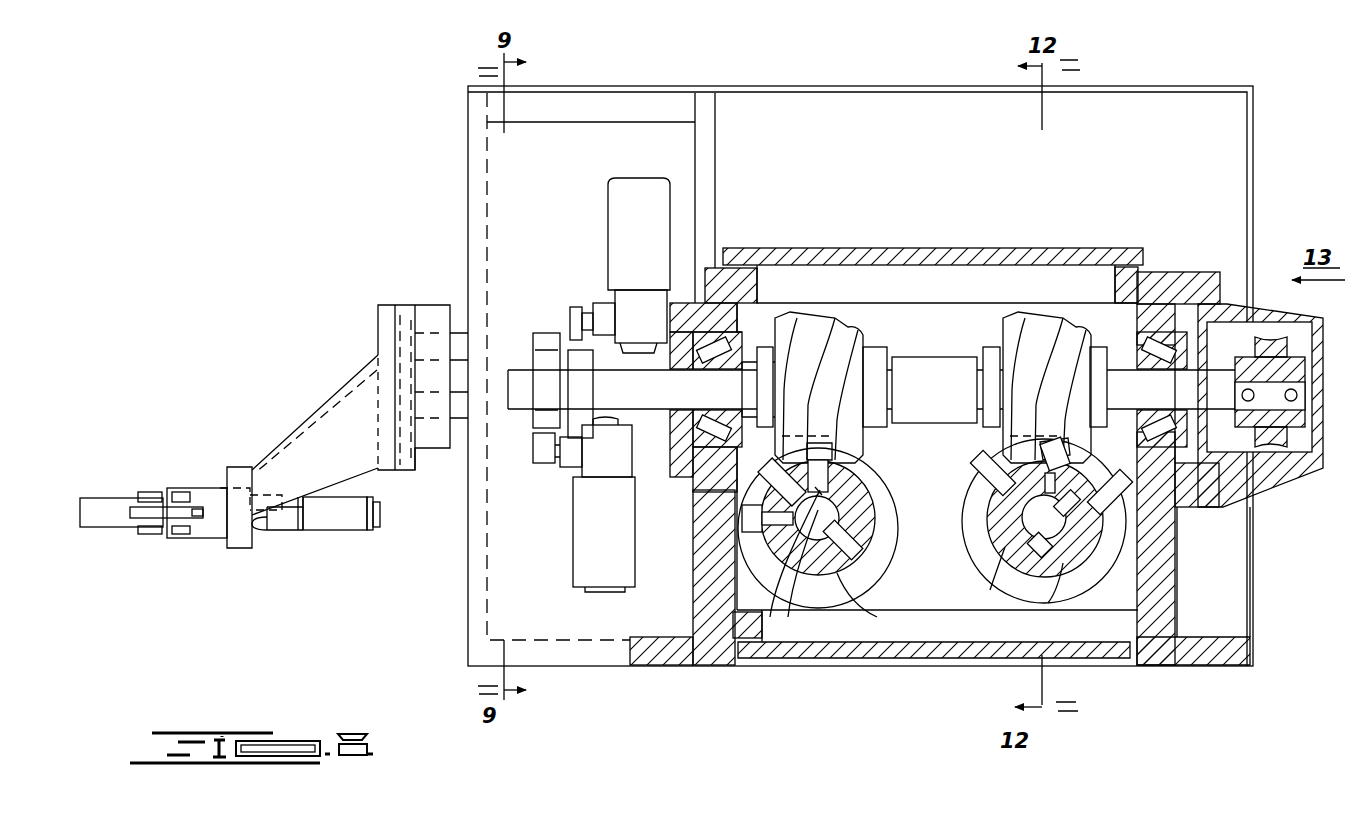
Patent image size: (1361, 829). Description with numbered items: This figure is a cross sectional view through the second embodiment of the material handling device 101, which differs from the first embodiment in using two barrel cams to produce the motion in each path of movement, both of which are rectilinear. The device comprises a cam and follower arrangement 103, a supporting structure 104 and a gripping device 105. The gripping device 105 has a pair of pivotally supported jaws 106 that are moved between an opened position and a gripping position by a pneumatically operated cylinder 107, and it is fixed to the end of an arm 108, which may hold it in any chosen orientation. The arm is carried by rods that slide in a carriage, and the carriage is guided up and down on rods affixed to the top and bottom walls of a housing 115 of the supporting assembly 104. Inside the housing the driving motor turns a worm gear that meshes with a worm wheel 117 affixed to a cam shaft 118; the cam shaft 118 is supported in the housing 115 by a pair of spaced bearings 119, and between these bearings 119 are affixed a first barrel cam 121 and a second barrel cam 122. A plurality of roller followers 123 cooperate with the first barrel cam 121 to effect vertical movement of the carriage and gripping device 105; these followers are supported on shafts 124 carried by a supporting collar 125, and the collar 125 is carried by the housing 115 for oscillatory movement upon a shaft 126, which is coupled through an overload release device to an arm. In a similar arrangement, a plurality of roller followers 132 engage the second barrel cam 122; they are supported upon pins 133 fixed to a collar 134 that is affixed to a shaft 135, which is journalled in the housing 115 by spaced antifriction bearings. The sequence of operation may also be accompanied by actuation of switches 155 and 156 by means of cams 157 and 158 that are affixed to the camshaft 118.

The material handling device 101 is at (428, 590).
The cam and follower arrangement 103 is at (1000, 236).
The supporting structure 104 is at (464, 180).
The gripping device 105 is at (192, 488).
The jaws 106 is at (95, 525).
The pneumatically operated cylinder 107 is at (355, 525).
The arm 108 is at (340, 383).
The housing 115 is at (806, 88).
The worm wheel 117 is at (1272, 340).
The cam shaft 118 is at (946, 358).
The bearings 119 is at (700, 355).
The first barrel cam 121 is at (795, 320).
The second barrel cam 122 is at (1020, 325).
The roller followers 123 is at (830, 452).
The shafts 124 is at (775, 618).
The supporting collar 125 is at (843, 578).
The shaft 126 is at (790, 477).
The roller followers 132 is at (1058, 480).
The pins 133 is at (1000, 543).
The collar 134 is at (1060, 575).
The shaft 135 is at (985, 567).
The switch 155 is at (617, 195).
The switch 156 is at (580, 556).
The cam 157 is at (548, 340).
The cam 158 is at (540, 418).